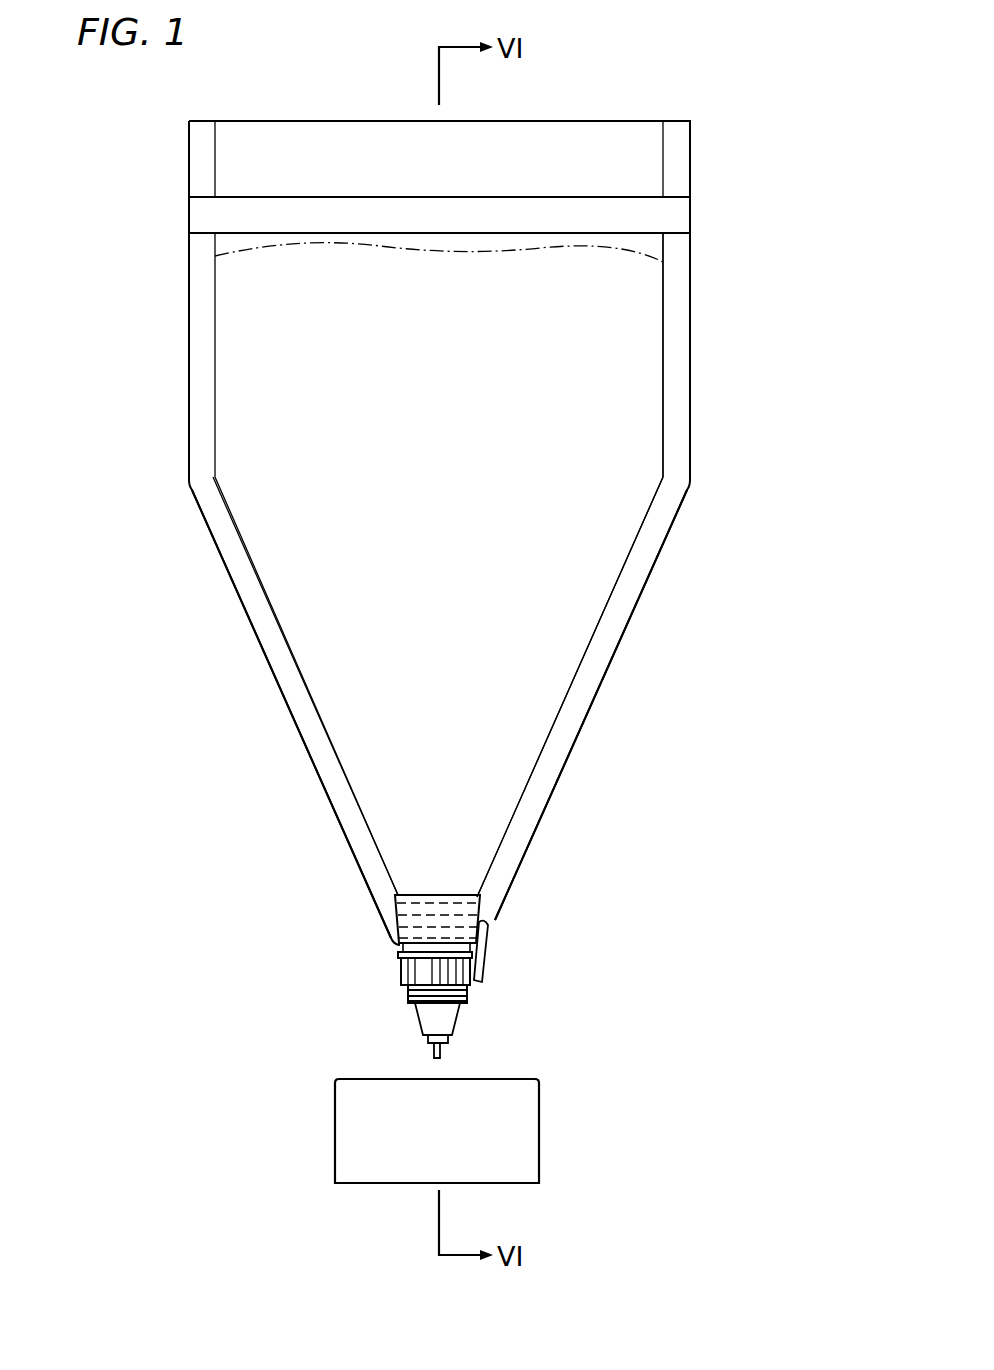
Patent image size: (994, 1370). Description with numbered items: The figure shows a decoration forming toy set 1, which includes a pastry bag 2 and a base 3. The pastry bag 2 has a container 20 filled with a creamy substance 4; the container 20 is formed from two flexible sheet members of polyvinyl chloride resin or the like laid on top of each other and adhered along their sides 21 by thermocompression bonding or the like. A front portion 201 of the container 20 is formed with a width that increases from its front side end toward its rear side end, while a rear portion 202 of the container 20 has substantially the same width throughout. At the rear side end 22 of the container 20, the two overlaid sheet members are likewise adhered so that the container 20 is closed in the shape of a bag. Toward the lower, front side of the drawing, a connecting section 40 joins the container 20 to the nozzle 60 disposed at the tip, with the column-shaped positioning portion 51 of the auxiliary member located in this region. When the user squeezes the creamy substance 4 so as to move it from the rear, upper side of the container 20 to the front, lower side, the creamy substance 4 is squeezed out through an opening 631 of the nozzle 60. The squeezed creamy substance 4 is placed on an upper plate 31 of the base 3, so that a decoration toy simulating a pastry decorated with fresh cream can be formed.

The decoration forming toy set 1 is at (750, 119).
The pastry bag 2 is at (128, 247).
The base 3 is at (528, 1132).
The creamy substance 4 is at (233, 344).
The container 20 is at (690, 423).
The sides 21 is at (249, 590).
The rear side end 22 is at (665, 217).
The front portion 201 is at (530, 720).
The rear portion 202 is at (643, 344).
The upper plate 31 is at (350, 1078).
The connecting section 40 is at (490, 900).
The positioning portion 51 is at (433, 1048).
The nozzle 60 is at (485, 988).
The opening 631 is at (459, 1045).